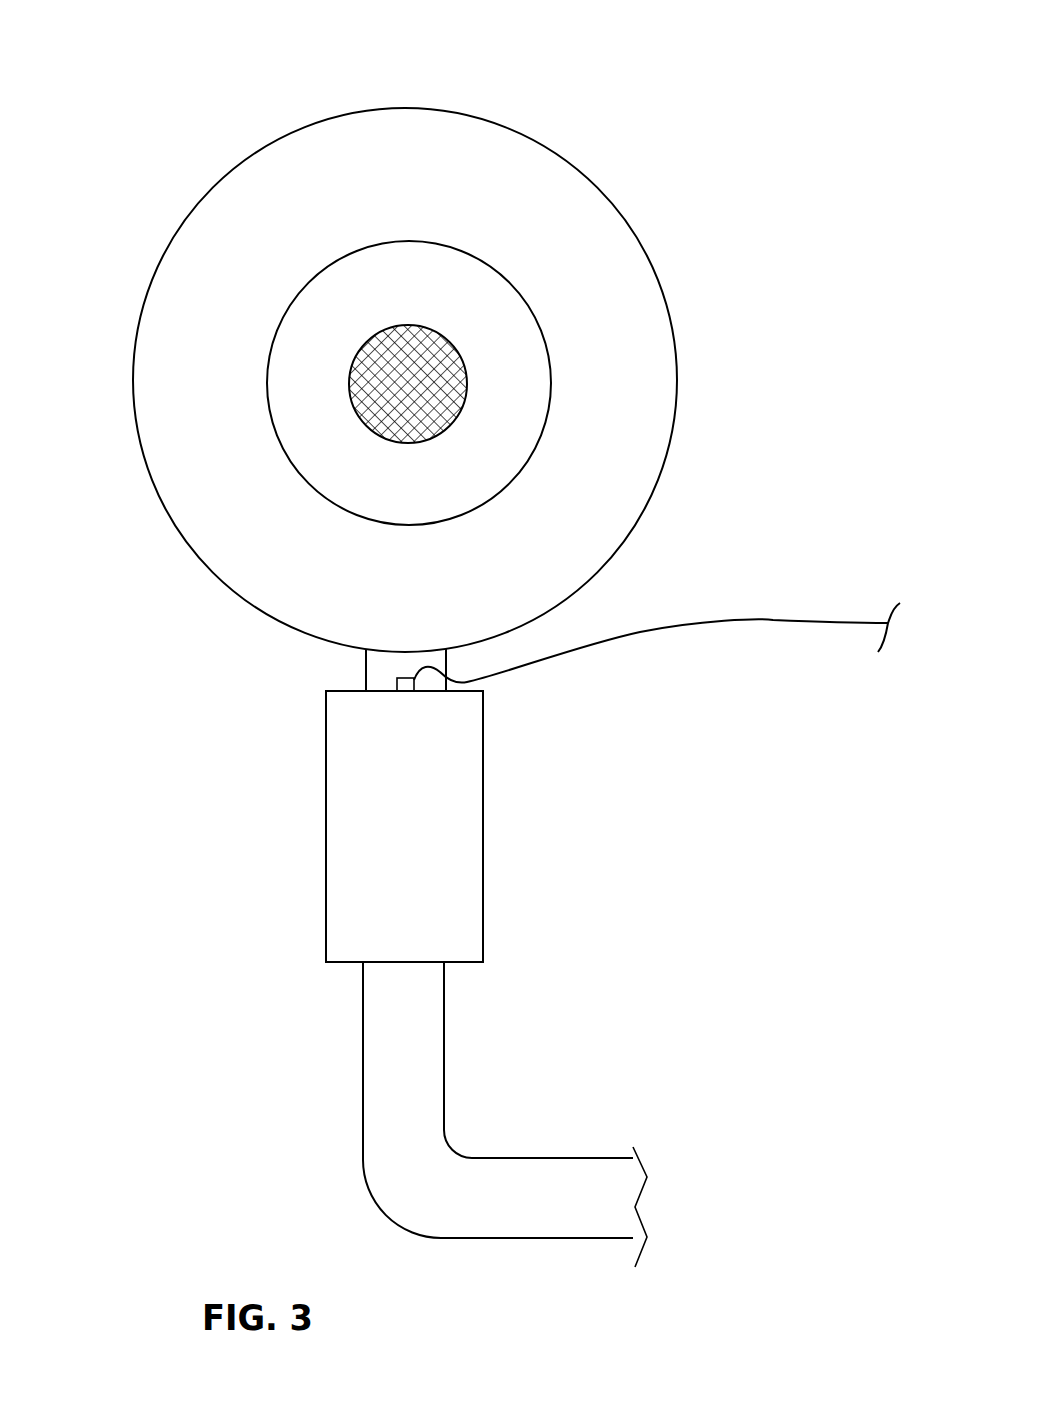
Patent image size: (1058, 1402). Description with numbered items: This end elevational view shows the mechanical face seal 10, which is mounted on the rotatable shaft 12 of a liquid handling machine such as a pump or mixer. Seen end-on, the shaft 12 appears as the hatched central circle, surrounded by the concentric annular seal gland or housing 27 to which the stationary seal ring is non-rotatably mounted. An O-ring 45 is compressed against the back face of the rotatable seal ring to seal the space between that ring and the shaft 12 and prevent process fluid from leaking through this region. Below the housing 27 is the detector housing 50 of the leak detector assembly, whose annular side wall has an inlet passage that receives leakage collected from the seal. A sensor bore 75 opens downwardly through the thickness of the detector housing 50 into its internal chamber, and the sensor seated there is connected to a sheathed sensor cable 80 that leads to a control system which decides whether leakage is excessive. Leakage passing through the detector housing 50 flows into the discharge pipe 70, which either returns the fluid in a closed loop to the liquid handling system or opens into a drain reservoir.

The mechanical face seal 10 is at (338, 90).
The seal gland or housing 27 is at (487, 120).
The rotatable shaft 12 is at (447, 390).
The O-ring 45 is at (372, 663).
The detector housing 50 is at (350, 872).
The sensor bore 75 is at (400, 685).
The sheathed sensor cable 80 is at (712, 623).
The discharge pipe 70 is at (432, 1065).